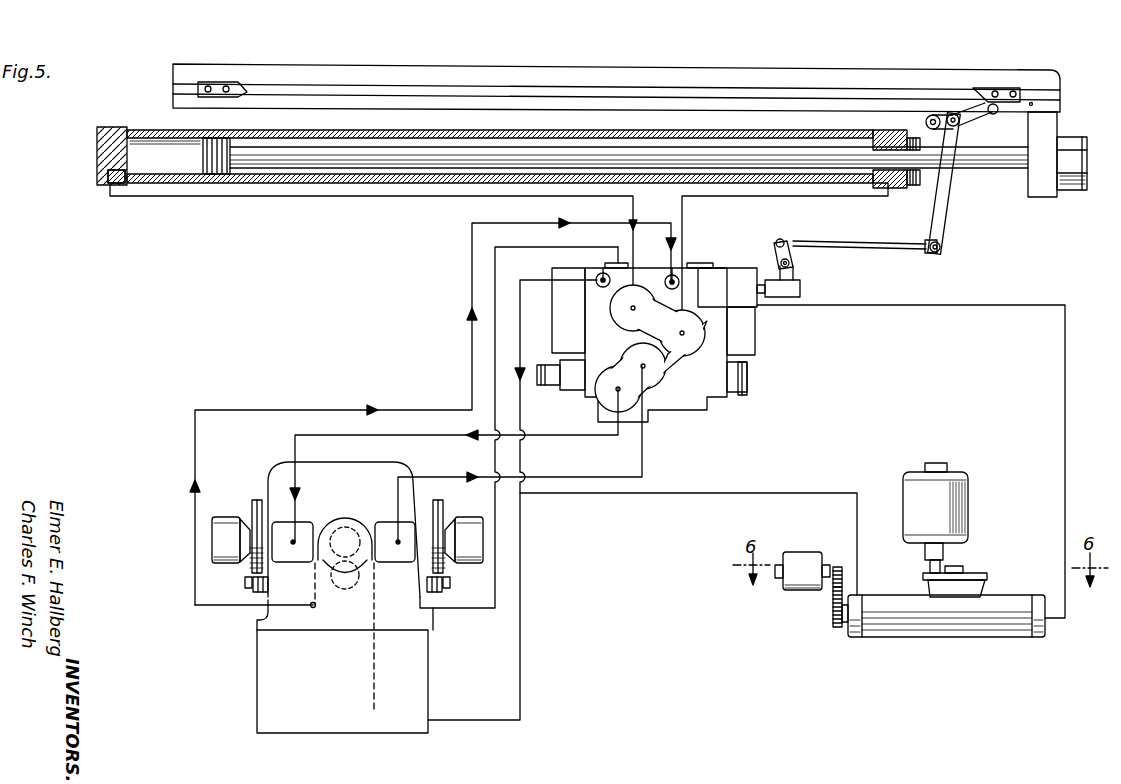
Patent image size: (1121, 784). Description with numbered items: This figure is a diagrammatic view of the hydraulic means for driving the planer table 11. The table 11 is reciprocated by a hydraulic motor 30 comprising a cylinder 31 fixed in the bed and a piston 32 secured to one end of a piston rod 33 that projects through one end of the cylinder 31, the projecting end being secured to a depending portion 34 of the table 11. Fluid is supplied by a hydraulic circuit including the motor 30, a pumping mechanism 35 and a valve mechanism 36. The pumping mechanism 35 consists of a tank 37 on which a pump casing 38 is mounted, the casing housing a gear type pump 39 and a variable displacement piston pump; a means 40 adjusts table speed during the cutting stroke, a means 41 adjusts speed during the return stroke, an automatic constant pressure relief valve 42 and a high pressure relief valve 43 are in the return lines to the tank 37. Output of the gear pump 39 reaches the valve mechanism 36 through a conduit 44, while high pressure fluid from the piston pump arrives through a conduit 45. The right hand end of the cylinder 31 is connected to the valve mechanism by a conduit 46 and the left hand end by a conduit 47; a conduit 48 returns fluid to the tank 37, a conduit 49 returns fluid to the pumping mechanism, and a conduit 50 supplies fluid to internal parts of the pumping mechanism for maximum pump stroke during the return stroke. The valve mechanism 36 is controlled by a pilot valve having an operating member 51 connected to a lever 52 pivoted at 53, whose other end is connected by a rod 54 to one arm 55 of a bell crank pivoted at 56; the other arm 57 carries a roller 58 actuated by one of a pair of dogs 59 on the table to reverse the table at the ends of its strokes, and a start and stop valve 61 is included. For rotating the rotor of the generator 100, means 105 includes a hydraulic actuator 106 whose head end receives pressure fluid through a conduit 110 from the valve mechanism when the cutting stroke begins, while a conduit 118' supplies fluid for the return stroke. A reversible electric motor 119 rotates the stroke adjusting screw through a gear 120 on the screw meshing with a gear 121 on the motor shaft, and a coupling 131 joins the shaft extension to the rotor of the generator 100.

The table 11 is at (650, 72).
The hydraulic motor 30 is at (108, 200).
The cylinder 31 is at (440, 130).
The piston 32 is at (218, 180).
The piston rod 33 is at (655, 147).
The depending portion 34 is at (1047, 125).
The pumping mechanism 35 is at (359, 614).
The valve mechanism 36 is at (716, 258).
The tank 37 is at (310, 722).
The pump casing 38 is at (401, 625).
The gear type pump 39 is at (352, 582).
The cutting stroke speed adjusting means 40 is at (227, 535).
The return stroke speed adjusting means 41 is at (480, 550).
The automatic constant pressure relief valve 42 is at (245, 582).
The high pressure relief valve 43 is at (450, 586).
The conduit 44 is at (242, 410).
The conduit 45 is at (452, 477).
The conduit 46 is at (792, 200).
The conduit 47 is at (338, 197).
The conduit 48 is at (519, 677).
The conduit 49 is at (557, 437).
The conduit 50 is at (494, 360).
The operating member 51 is at (793, 295).
The lever 52 is at (787, 278).
The pivot 53 is at (773, 258).
The rod 54 is at (877, 243).
The arm 55 is at (948, 220).
The pivot 56 is at (932, 114).
The arm 57 is at (966, 118).
The roller 58 is at (1033, 104).
The dogs 59 is at (236, 86).
The start and stop valve 61 is at (735, 393).
The generator 100 is at (960, 500).
The rotor actuating means 105 is at (910, 590).
The hydraulic actuator 106 is at (995, 628).
The conduit 110 is at (1063, 382).
The conduit 118' is at (688, 524).
The reversible electric motor 119 is at (805, 552).
The gear 120 is at (835, 628).
The gear 121 is at (838, 567).
The coupling 131 is at (960, 560).